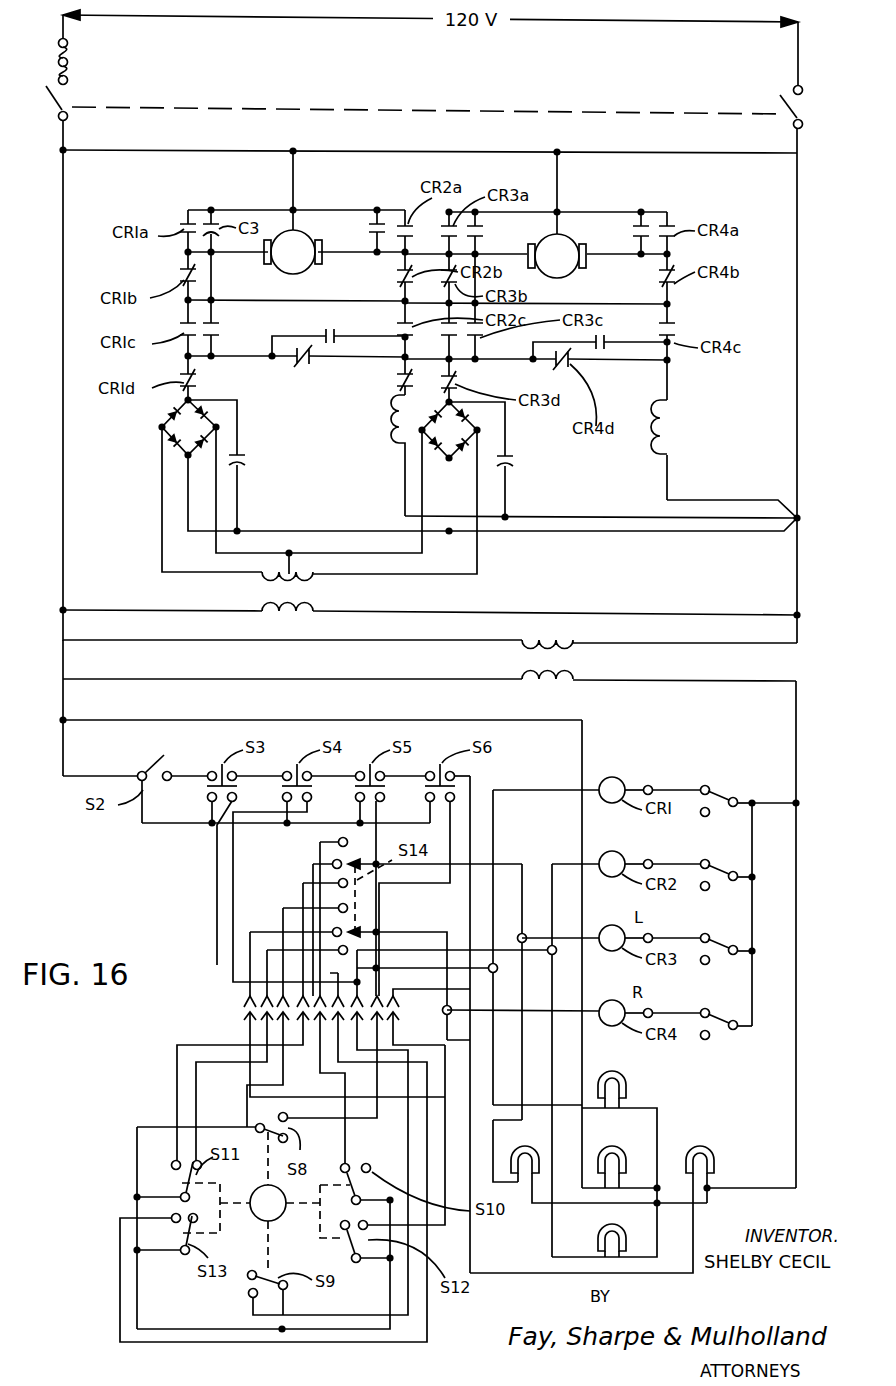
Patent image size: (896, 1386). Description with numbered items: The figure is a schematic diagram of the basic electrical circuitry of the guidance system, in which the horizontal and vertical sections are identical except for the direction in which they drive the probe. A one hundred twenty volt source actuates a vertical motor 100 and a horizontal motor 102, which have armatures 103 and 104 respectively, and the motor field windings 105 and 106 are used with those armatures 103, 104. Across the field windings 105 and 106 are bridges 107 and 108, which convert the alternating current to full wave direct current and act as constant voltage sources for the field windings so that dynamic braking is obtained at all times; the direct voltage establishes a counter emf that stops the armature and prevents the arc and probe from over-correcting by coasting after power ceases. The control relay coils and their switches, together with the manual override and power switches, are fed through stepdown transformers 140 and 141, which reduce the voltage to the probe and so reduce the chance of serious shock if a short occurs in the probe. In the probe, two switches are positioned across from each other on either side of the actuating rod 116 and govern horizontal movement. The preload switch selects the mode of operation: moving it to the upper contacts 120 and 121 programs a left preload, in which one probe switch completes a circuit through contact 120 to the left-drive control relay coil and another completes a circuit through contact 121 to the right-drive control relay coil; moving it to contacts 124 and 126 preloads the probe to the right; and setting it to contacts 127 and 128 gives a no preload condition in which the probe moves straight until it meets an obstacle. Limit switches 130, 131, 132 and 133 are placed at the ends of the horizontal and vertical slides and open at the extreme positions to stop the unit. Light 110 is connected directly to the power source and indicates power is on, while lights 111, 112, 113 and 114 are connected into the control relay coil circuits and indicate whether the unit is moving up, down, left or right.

The vertical motor 100 is at (310, 234).
The horizontal motor 102 is at (580, 236).
The armature 103 is at (310, 268).
The armature 104 is at (574, 272).
The motor field winding 105 is at (390, 424).
The motor field winding 106 is at (675, 431).
The bridge 107 is at (162, 430).
The bridge 108 is at (424, 434).
The light 110 is at (606, 1152).
The light 111 is at (627, 1082).
The light 112 is at (708, 1152).
The light 113 is at (603, 1234).
The light 114 is at (512, 1158).
The actuating rod 116 is at (283, 1216).
The contact 120 is at (338, 842).
The contact 121 is at (338, 908).
The contact 124 is at (338, 883).
The contact 126 is at (343, 955).
The contact 127 is at (332, 864).
The contact 128 is at (332, 932).
The limit switch 130 is at (712, 795).
The limit switch 131 is at (718, 870).
The limit switch 132 is at (718, 944).
The limit switch 133 is at (718, 1019).
The stepdown transformer 140 is at (316, 600).
The stepdown transformer 141 is at (575, 670).